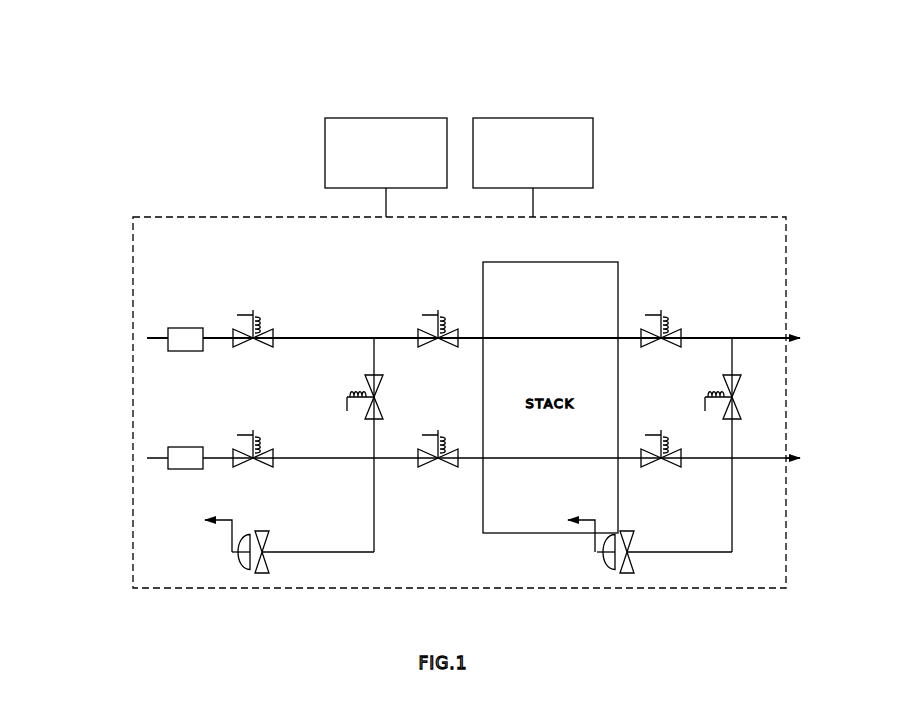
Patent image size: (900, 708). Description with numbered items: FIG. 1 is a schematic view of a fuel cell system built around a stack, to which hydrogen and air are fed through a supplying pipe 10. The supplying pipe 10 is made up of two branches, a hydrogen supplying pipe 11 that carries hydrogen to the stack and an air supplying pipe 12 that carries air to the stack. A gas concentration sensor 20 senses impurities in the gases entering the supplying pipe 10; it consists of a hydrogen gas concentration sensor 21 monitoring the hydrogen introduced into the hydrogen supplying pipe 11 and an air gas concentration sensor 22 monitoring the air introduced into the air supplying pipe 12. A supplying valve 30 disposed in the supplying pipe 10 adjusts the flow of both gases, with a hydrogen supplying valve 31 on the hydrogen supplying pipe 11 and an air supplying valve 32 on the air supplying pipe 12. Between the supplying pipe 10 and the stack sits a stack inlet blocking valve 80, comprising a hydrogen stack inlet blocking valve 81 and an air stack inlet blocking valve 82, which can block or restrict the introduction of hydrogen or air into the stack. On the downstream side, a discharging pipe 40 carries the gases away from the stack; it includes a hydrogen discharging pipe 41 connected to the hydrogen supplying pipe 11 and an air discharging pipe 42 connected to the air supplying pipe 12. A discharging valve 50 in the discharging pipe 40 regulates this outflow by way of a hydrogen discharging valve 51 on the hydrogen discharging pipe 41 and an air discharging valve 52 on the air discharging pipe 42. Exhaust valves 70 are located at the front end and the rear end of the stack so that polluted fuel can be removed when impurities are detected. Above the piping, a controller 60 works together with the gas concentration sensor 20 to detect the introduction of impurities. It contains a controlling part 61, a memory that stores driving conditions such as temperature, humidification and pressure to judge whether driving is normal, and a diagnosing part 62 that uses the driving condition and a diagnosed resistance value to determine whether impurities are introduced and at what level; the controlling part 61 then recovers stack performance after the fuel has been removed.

The supplying pipe 10 is at (72, 378).
The hydrogen supplying pipe 11 is at (167, 350).
The air supplying pipe 12 is at (160, 457).
The gas concentration sensor 20 is at (100, 268).
The hydrogen gas concentration sensor 21 is at (188, 328).
The air gas concentration sensor 22 is at (182, 447).
The supplying valve 30 is at (325, 258).
The hydrogen supplying valve 31 is at (264, 318).
The air supplying valve 32 is at (268, 450).
The discharging pipe 40 is at (803, 265).
The hydrogen discharging pipe 41 is at (777, 337).
The air discharging pipe 42 is at (777, 455).
The discharging valve 50 is at (733, 258).
The hydrogen discharging valve 51 is at (672, 320).
The air discharging valve 52 is at (678, 450).
The controller 60 is at (385, 68).
The controlling part 61 is at (384, 118).
The diagnosing part 62 is at (533, 118).
The exhaust valve 70 is at (262, 573).
The stack inlet blocking valve 80 is at (367, 258).
The hydrogen stack inlet blocking valve 81 is at (430, 318).
The air stack inlet blocking valve 82 is at (422, 430).